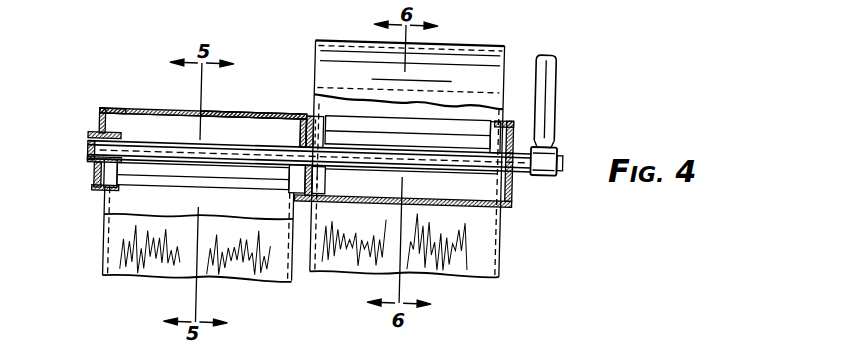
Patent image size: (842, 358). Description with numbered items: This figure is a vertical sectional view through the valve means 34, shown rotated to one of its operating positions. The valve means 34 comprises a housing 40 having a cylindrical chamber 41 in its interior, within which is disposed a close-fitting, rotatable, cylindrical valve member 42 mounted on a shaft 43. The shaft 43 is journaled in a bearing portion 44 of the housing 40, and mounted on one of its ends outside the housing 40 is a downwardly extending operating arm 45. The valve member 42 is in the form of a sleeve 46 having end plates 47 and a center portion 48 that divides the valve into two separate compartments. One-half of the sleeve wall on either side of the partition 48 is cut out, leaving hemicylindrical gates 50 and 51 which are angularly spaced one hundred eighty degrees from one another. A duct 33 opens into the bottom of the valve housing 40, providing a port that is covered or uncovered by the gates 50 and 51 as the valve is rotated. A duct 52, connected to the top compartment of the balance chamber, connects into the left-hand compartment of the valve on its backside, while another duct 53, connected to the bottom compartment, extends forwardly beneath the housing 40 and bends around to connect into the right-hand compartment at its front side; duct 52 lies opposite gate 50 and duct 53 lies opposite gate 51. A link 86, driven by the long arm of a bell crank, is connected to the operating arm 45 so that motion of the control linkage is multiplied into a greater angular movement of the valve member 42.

The duct 33 is at (175, 170).
The valve means 34 is at (170, 101).
The housing 40 is at (100, 120).
The cylindrical chamber 41 is at (240, 112).
The valve member 42 is at (345, 203).
The shaft 43 is at (279, 148).
The bearing portion 44 is at (90, 162).
The operating arm 45 is at (555, 178).
The sleeve 46 is at (243, 113).
The end plates 47 is at (103, 123).
The center portion 48 is at (308, 179).
The hemicylindrical gate 50 is at (143, 127).
The hemicylindrical gate 51 is at (433, 183).
The duct 52 is at (108, 252).
The duct 53 is at (472, 53).
The link 86 is at (553, 98).